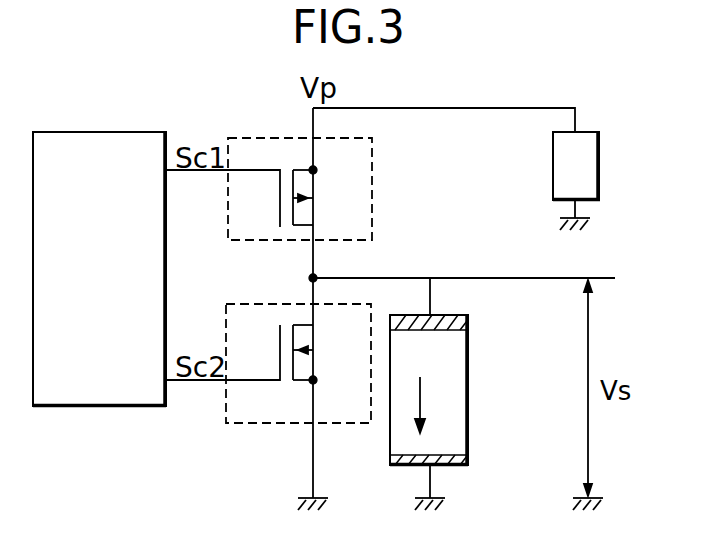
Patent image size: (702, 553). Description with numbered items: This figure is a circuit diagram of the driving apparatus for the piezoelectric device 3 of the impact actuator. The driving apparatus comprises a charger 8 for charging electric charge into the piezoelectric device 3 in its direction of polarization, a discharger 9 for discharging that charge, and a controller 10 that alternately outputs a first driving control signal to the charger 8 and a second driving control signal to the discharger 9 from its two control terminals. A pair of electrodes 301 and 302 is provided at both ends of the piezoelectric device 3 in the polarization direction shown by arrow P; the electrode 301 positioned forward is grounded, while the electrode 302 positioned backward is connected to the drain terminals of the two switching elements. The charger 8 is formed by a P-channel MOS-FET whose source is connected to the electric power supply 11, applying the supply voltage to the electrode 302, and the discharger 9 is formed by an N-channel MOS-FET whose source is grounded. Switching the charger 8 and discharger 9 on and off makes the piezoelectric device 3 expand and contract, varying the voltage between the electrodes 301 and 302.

The controller 10 is at (67, 132).
The charger 8 is at (375, 170).
The discharger 9 is at (286, 304).
The electric power supply 11 is at (600, 150).
The piezoelectric device 3 is at (467, 394).
The electrode 302 is at (466, 315).
The electrode 301 is at (468, 463).